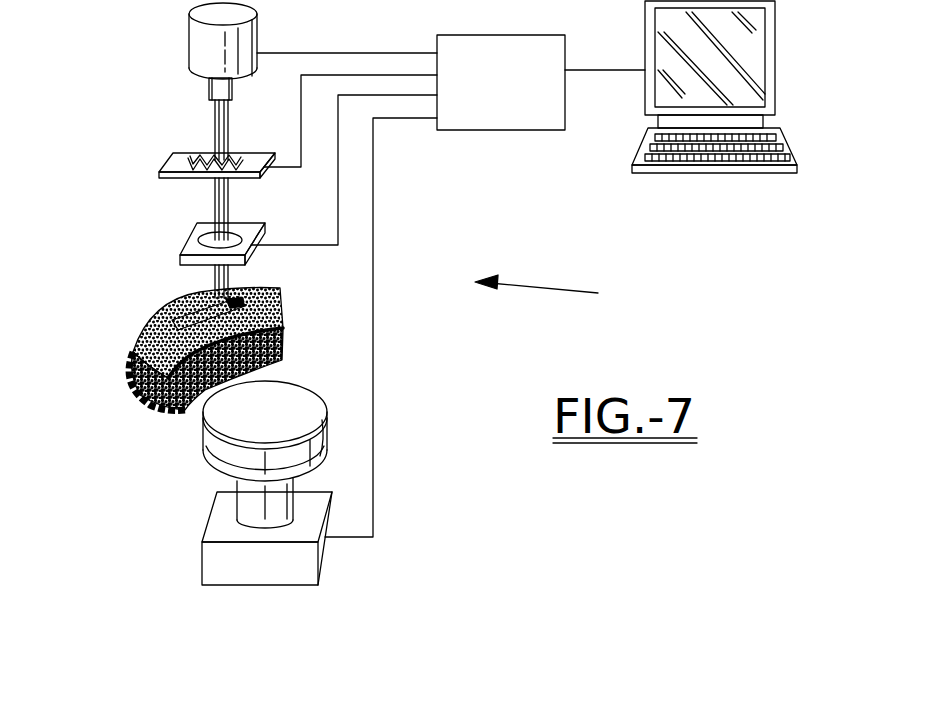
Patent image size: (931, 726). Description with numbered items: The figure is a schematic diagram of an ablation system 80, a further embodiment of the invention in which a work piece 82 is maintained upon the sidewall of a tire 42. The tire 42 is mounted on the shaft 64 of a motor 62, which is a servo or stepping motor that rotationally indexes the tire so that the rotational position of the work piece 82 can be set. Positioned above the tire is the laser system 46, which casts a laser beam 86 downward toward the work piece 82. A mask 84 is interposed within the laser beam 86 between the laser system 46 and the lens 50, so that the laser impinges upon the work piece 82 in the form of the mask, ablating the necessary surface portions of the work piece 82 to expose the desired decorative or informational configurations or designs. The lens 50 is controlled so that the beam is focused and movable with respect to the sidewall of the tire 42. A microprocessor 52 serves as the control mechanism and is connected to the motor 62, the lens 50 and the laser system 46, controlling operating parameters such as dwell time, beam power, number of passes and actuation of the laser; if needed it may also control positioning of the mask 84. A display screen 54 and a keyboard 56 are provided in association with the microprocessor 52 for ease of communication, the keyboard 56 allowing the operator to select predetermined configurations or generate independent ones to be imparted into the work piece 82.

The tire 42 is at (131, 378).
The laser system 46 is at (190, 41).
The lens 50 is at (187, 237).
The microprocessor 52 is at (507, 131).
The display screen 54 is at (775, 63).
The keyboard 56 is at (787, 140).
The motor 62 is at (202, 560).
The shaft 64 is at (245, 497).
The ablation system 80 is at (554, 291).
The work piece 82 is at (190, 302).
The mask 84 is at (165, 165).
The laser beam 86 is at (213, 125).